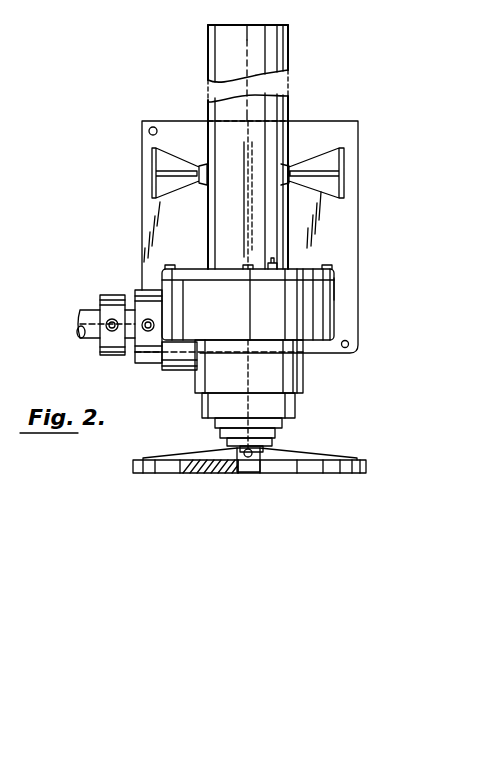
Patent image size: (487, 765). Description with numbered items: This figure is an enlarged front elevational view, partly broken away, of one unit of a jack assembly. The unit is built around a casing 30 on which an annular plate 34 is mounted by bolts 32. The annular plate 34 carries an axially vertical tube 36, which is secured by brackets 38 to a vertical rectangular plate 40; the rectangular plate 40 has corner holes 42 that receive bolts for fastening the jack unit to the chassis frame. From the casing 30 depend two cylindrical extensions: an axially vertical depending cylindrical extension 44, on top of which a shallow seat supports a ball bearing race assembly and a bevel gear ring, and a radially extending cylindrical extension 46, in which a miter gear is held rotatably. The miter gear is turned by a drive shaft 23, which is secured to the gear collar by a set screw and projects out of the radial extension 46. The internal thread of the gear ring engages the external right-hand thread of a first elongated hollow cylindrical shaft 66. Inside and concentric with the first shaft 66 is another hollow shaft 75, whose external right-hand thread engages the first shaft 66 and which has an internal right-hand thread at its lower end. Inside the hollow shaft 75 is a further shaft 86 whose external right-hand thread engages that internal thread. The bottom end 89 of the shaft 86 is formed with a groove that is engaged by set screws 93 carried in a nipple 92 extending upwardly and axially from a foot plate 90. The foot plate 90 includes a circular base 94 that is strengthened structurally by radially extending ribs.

The drive shaft 23 is at (90, 333).
The casing 30 is at (318, 313).
The bolts 32 is at (327, 267).
The annular plate 34 is at (335, 278).
The tube 36 is at (287, 108).
The brackets 38 is at (320, 152).
The vertical rectangular plate 40 is at (340, 218).
The corner holes 42 is at (349, 344).
The depending cylindrical extension 44 is at (285, 377).
The radially extending cylindrical extension 46 is at (178, 367).
The first elongated hollow cylindrical shaft 66 is at (279, 426).
The hollow shaft 75 is at (272, 436).
The shaft 86 is at (262, 443).
The bottom end 89 is at (244, 447).
The foot plate 90 is at (345, 479).
The nipple 92 is at (247, 463).
The set screws 93 is at (257, 463).
The circular base 94 is at (215, 465).